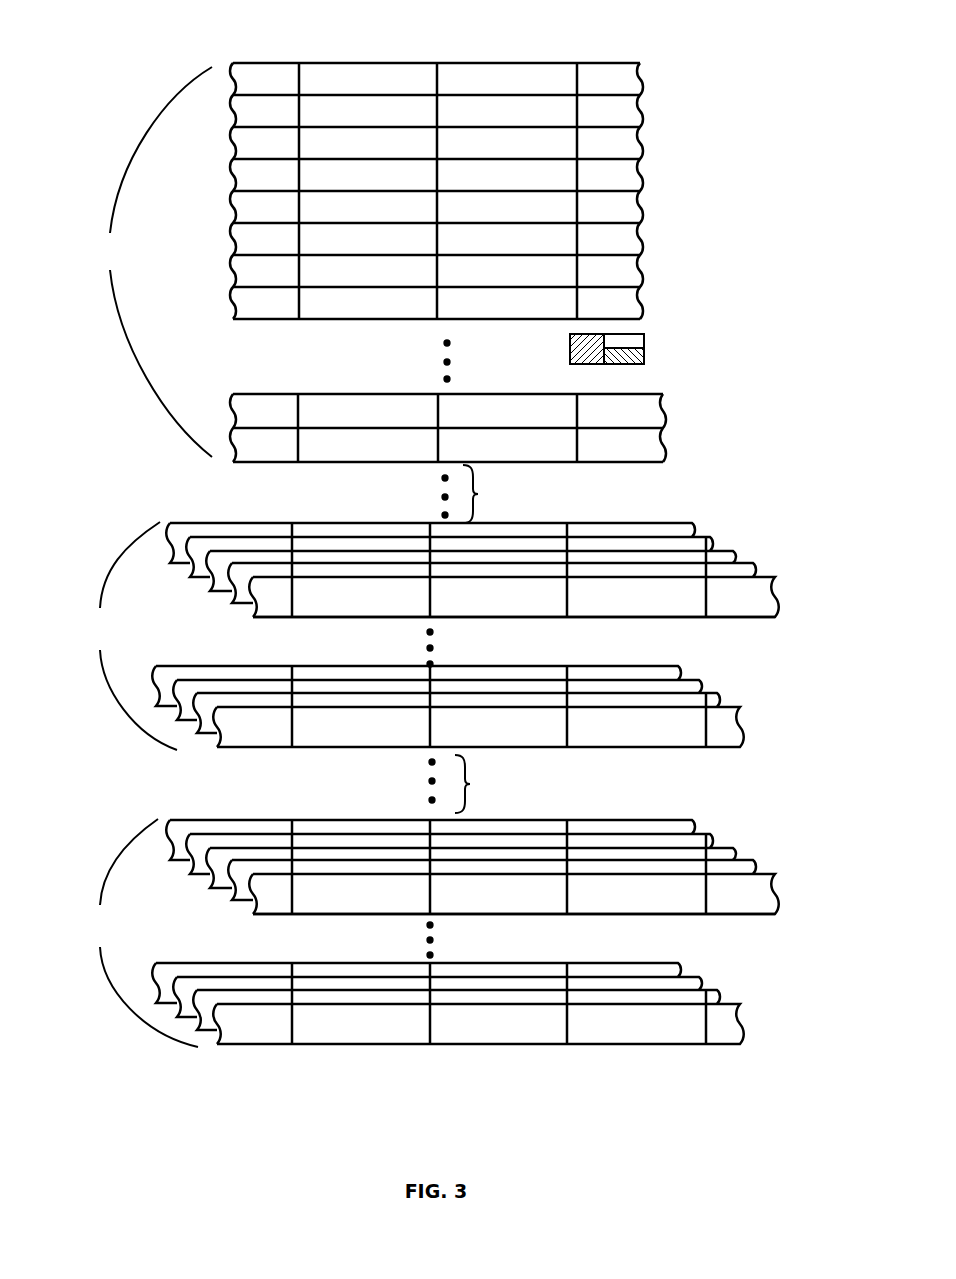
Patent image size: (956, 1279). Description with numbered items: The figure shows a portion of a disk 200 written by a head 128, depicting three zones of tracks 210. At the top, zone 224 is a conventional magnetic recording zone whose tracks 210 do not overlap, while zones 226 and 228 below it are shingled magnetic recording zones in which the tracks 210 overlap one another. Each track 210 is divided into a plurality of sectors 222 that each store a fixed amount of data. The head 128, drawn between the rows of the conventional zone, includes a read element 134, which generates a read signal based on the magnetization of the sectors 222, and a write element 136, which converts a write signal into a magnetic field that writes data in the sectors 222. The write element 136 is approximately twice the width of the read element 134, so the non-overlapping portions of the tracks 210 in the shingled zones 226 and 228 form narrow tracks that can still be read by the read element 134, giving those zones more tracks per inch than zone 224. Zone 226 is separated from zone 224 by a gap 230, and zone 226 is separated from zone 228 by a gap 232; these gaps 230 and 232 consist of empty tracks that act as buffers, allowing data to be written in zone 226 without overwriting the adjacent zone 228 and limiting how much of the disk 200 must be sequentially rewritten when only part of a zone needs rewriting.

The disk 200 is at (364, 46).
The tracks 210 is at (646, 80).
The sectors 222 is at (548, 62).
The zone 224 is at (154, 262).
The zone 226 is at (130, 636).
The zone 228 is at (141, 933).
The gap 230 is at (482, 494).
The gap 232 is at (472, 784).
The head 128 is at (645, 362).
The read element 134 is at (624, 365).
The write element 136 is at (580, 365).